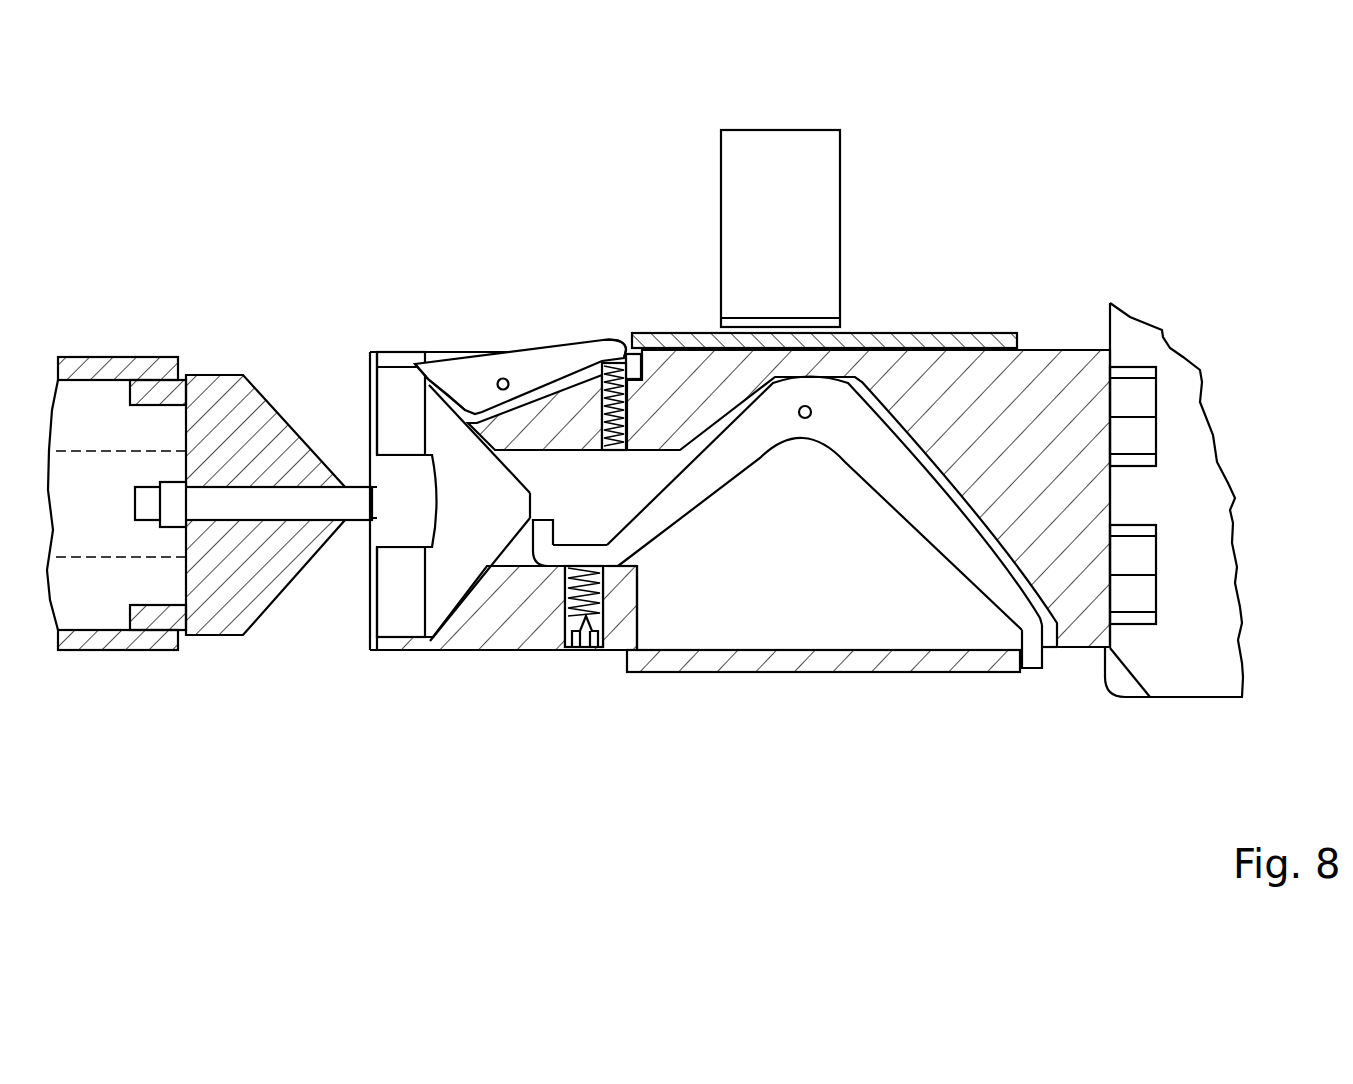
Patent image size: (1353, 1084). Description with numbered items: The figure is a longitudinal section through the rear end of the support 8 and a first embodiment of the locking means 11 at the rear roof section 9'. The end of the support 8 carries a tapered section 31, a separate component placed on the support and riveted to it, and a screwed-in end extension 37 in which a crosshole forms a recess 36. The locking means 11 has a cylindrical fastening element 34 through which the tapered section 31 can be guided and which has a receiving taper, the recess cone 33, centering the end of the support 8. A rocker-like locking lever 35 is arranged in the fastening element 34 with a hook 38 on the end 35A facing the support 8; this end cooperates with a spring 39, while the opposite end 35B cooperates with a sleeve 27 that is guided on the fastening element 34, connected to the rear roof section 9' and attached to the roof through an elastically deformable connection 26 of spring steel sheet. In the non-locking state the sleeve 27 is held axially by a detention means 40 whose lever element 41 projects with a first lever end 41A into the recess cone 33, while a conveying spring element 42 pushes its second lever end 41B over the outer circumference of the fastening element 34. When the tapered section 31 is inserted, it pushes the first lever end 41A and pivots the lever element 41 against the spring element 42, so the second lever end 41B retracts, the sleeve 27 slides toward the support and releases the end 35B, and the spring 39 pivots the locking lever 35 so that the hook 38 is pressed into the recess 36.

The support 8 is at (127, 645).
The rear roof section 9' is at (1174, 558).
The locking means 11 is at (531, 670).
The elastically deformable connection 26 is at (812, 185).
The sleeve 27 is at (908, 334).
The tapered section 31 is at (291, 396).
The recess cone 33 is at (460, 600).
The cylindrical fastening element 34 is at (485, 670).
The locking lever 35 is at (943, 537).
The end of the locking lever facing the support 35A is at (561, 562).
The end of the locking lever facing away from the support 35B is at (1031, 646).
The recess 36 is at (369, 499).
The end extension 37 is at (396, 499).
The hook 38 is at (539, 539).
The spring 39 is at (588, 624).
The detention means 40 is at (521, 330).
The lever element 41 is at (562, 354).
The first lever end 41A is at (431, 372).
The second lever end 41B is at (615, 348).
The conveying spring element 42 is at (620, 380).